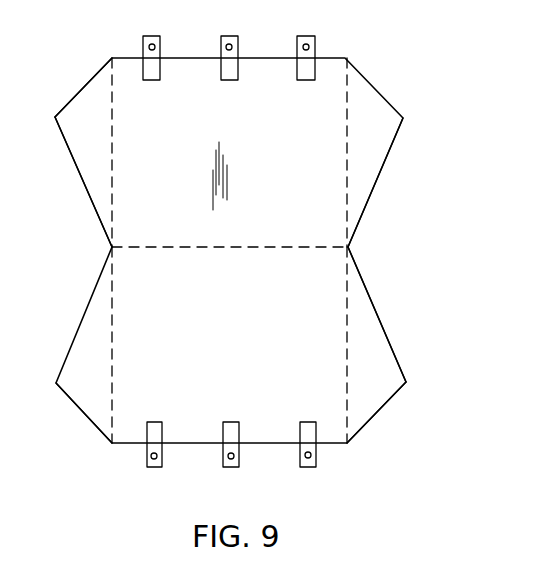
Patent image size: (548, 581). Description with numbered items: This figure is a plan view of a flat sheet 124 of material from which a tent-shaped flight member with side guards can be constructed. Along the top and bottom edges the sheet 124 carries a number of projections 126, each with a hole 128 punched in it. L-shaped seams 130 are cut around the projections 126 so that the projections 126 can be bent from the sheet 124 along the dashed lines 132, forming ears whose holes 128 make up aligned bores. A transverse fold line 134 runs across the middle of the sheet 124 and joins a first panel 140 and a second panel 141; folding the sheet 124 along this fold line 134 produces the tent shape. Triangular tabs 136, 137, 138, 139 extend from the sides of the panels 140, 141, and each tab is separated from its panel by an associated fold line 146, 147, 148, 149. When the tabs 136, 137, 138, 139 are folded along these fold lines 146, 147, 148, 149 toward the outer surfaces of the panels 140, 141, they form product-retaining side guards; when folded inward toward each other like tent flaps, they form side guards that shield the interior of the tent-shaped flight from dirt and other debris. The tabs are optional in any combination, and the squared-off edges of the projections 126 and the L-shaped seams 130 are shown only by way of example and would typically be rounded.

The sheet 124 is at (92, 247).
The projections 126 is at (315, 40).
The hole 128 is at (230, 46).
The L-shaped seams 130 is at (160, 81).
The dashed lines 132 is at (218, 62).
The fold line 134 is at (310, 247).
The tab 136 is at (79, 402).
The tab 137 is at (87, 92).
The tab 138 is at (386, 360).
The tab 139 is at (392, 138).
The first panel 140 is at (328, 291).
The second panel 141 is at (135, 196).
The fold line 146 is at (115, 350).
The fold line 147 is at (113, 174).
The fold line 148 is at (347, 372).
The fold line 149 is at (344, 140).